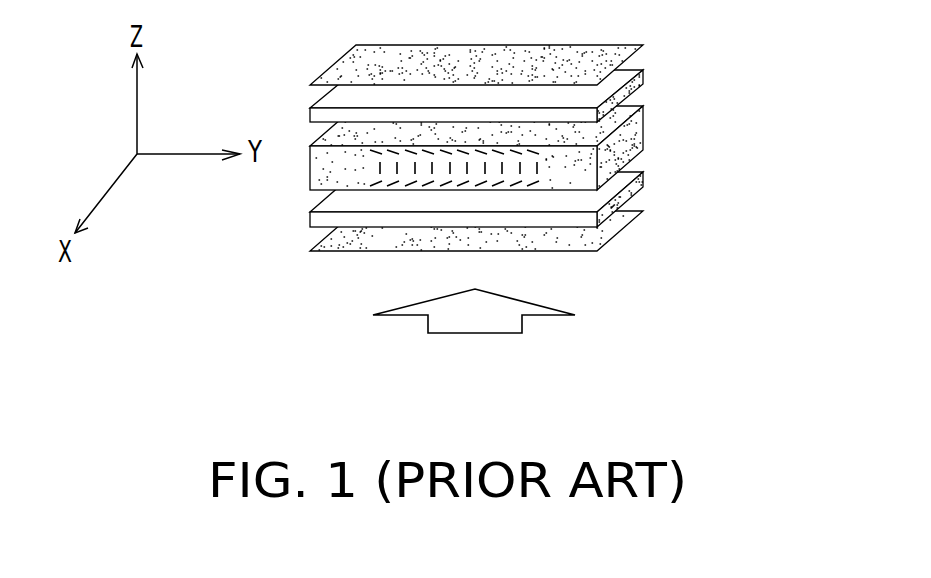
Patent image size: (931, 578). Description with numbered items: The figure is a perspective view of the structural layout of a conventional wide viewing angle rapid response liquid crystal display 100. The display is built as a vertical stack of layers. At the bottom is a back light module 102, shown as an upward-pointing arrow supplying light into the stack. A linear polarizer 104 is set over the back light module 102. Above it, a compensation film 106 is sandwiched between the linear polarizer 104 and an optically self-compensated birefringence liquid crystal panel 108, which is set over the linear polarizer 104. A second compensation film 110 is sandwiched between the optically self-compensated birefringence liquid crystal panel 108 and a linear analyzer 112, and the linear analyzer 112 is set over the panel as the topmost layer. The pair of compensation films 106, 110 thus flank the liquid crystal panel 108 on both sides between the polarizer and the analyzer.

The liquid crystal display 100 is at (548, 198).
The back light module 102 is at (517, 325).
The linear polarizer 104 is at (612, 238).
The compensation film 106 is at (642, 187).
The optically self-compensated birefringence liquid crystal panel 108 is at (633, 140).
The compensation film 110 is at (641, 76).
The linear analyzer 112 is at (605, 47).